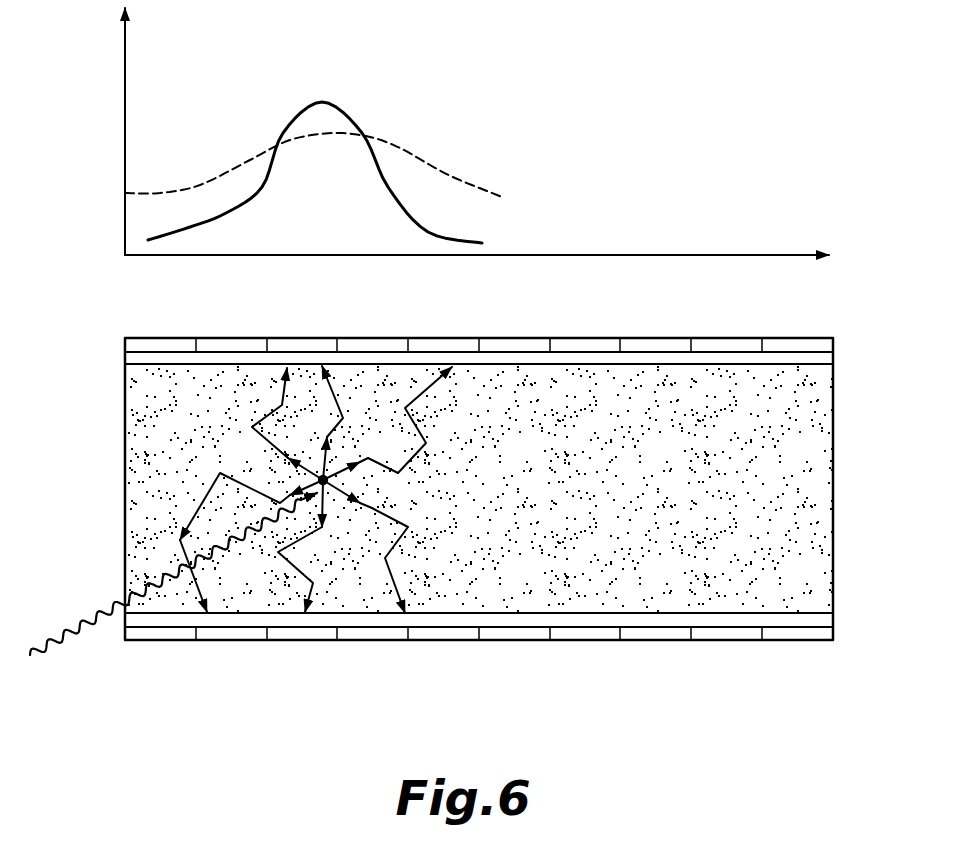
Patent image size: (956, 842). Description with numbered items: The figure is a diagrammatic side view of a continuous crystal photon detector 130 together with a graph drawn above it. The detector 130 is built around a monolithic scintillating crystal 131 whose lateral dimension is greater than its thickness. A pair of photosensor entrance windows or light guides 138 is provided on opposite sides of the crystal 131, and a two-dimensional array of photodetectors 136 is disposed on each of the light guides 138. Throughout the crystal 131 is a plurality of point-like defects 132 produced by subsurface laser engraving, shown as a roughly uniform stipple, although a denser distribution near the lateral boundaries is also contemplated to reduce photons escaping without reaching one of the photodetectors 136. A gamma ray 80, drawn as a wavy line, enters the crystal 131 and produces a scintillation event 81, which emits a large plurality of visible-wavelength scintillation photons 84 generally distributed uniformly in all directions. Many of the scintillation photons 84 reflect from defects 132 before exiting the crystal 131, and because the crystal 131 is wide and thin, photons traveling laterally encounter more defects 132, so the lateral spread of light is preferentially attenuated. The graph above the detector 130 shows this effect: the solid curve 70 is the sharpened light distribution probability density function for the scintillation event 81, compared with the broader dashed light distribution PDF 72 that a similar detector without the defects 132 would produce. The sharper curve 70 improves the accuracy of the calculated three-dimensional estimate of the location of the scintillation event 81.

The light distribution probability density function curve 70 is at (353, 118).
The light distribution PDF 72 is at (460, 180).
The gamma ray 80 is at (88, 604).
The scintillation event 81 is at (325, 478).
The scintillation photons 84 is at (323, 484).
The continuous crystal photon detector 130 is at (520, 511).
The monolithic scintillating crystal 131 is at (817, 540).
The point-like defects 132 is at (768, 478).
The photodetectors 136 is at (797, 341).
The photosensor entrance windows or light guides 138 is at (832, 357).